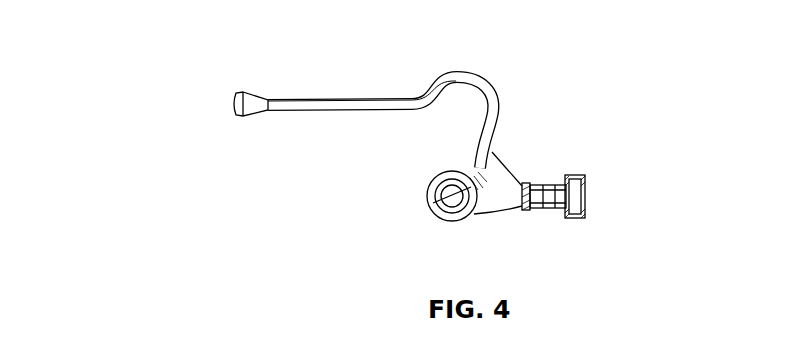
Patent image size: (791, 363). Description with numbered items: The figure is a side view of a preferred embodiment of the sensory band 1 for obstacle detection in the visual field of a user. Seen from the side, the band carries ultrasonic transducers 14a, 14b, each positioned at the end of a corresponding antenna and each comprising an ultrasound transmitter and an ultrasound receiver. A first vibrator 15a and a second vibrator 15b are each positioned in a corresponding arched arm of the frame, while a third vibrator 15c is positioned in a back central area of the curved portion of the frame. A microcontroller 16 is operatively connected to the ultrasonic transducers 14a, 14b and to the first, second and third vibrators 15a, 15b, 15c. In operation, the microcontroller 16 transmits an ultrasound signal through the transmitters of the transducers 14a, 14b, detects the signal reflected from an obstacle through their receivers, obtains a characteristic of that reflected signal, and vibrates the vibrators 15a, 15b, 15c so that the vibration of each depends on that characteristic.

The sensory band 1 is at (375, 135).
The ultrasonic transducer 14a is at (238, 105).
The ultrasonic transducer 14b is at (290, 122).
The first vibrator 15a is at (432, 203).
The second vibrator 15b is at (407, 192).
The third vibrator 15c is at (584, 203).
The microcontroller 16 is at (613, 192).